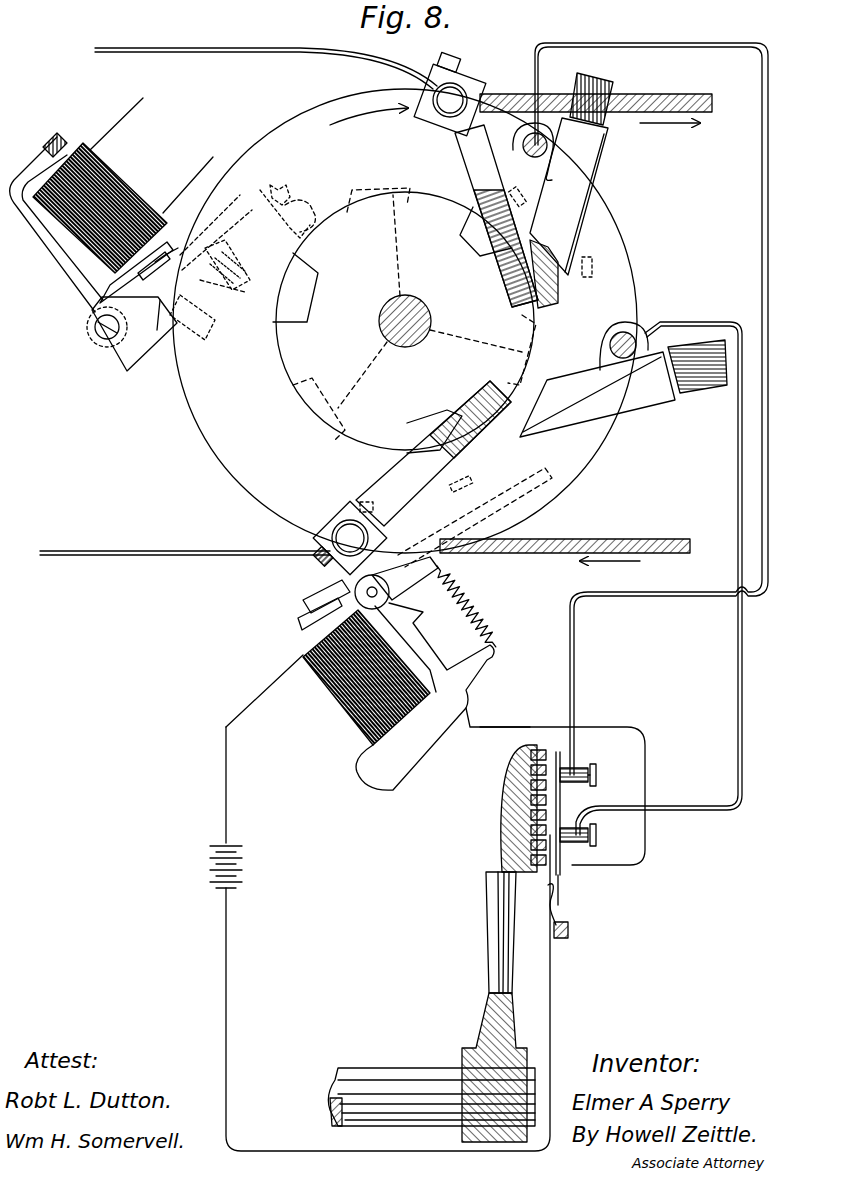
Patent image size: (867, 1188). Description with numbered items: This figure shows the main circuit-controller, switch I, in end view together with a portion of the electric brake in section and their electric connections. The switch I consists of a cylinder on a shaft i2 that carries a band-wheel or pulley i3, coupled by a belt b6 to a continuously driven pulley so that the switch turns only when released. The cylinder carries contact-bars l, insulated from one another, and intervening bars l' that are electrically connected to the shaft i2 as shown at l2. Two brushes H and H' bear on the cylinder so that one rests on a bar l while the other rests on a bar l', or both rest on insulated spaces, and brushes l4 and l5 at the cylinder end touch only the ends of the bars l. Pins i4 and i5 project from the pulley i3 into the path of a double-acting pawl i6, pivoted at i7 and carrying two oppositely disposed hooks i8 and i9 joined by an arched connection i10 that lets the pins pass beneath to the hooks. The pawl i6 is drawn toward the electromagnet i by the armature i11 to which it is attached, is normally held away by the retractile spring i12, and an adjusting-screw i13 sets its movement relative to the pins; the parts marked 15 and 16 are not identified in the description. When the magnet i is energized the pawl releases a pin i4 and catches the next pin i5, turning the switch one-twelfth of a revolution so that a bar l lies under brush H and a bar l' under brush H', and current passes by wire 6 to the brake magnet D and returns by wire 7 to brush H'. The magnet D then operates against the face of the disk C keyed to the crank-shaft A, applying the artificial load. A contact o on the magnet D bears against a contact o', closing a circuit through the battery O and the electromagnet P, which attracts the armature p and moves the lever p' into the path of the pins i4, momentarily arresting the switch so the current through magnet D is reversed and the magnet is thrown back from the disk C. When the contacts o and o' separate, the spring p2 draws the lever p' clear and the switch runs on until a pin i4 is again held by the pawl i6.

The switch I is at (129, 197).
The electromagnet i is at (125, 170).
The lead wire 15 is at (116, 124).
The lead wire 16 is at (188, 185).
The band-wheel or pulley i3 is at (200, 420).
The shaft i2 is at (432, 316).
The contact-bars l is at (403, 322).
The contact-bars l' is at (423, 303).
The connection l2 is at (397, 255).
The brush l4 is at (400, 493).
The brush l5 is at (470, 170).
The pins i4 is at (366, 504).
The pins i5 is at (242, 300).
The double-acting pawl i6 is at (172, 250).
The pivot i7 is at (95, 325).
The hook i8 is at (278, 185).
The hook i9 is at (302, 212).
The arched connection i10 is at (256, 236).
The armature i11 is at (136, 275).
The retractile spring i12 is at (210, 290).
The adjusting-screw i13 is at (157, 335).
The brush H is at (563, 190).
The brush H' is at (623, 379).
The belt b6 is at (680, 95).
The wire 6 is at (576, 670).
The wire 7 is at (736, 690).
The electromagnet P is at (378, 696).
The armature p is at (301, 621).
The lever p' is at (453, 539).
The spring p2 is at (470, 606).
The battery O is at (380, 939).
The disk C is at (502, 796).
The electromagnet D is at (545, 815).
The contact o is at (570, 887).
The contact o' is at (545, 910).
The crank-shaft A is at (408, 1068).